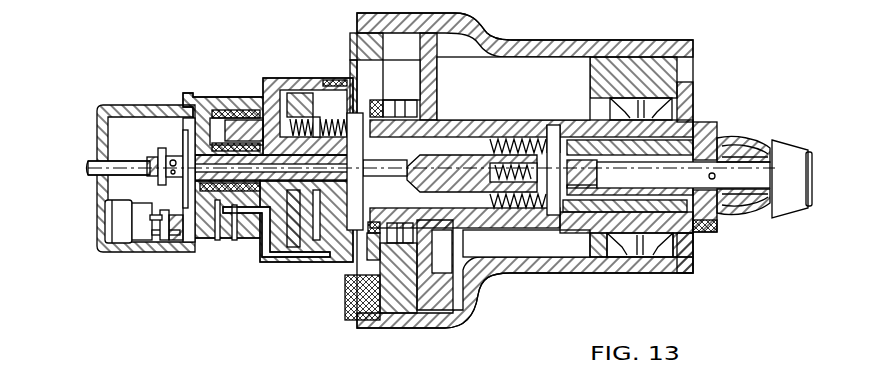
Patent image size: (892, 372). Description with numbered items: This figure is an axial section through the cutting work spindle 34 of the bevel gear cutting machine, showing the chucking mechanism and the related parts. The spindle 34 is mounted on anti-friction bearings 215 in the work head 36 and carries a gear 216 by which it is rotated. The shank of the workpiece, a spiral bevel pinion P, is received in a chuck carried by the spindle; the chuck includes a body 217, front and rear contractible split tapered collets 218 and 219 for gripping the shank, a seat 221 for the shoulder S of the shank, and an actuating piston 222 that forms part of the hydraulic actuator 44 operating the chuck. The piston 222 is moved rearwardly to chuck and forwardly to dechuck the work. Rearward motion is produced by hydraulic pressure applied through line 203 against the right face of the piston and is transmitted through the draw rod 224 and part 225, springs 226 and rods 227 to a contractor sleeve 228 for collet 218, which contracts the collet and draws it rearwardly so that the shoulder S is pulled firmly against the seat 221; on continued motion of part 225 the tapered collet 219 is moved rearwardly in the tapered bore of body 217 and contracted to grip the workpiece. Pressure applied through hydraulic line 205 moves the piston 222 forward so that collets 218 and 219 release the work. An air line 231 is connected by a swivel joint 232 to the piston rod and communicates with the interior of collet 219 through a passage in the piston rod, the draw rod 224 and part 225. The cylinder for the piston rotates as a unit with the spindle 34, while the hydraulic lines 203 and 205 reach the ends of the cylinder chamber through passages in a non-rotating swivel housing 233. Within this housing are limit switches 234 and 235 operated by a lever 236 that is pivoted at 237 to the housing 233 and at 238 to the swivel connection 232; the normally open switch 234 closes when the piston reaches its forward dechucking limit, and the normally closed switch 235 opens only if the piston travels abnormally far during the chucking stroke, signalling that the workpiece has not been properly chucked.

The work spindle 34 is at (527, 222).
The work head 36 is at (584, 262).
The hydraulic actuator 44 is at (292, 263).
The hydraulic line 203 is at (300, 246).
The hydraulic line 205 is at (248, 122).
The anti-friction bearings 215 is at (352, 300).
The gear 216 is at (433, 297).
The chuck body 217 is at (718, 125).
The front collet 218 is at (757, 203).
The rear collet 219 is at (700, 120).
The seat 221 is at (715, 223).
The actuating piston 222 is at (332, 250).
The draw rod 224 is at (475, 190).
The part 225 is at (560, 150).
The springs 226 is at (545, 200).
The rods 227 is at (697, 257).
The contractor sleeve 228 is at (752, 145).
The air line 231 is at (100, 163).
The swivel joint 232 is at (160, 150).
The swivel housing 233 is at (188, 248).
The limit switch 234 is at (125, 238).
The limit switch 235 is at (141, 243).
The lever 236 is at (123, 186).
The pivot 237 is at (148, 163).
The pivot 238 is at (172, 158).
The spiral bevel pinion P is at (793, 157).
The shoulder S is at (715, 177).